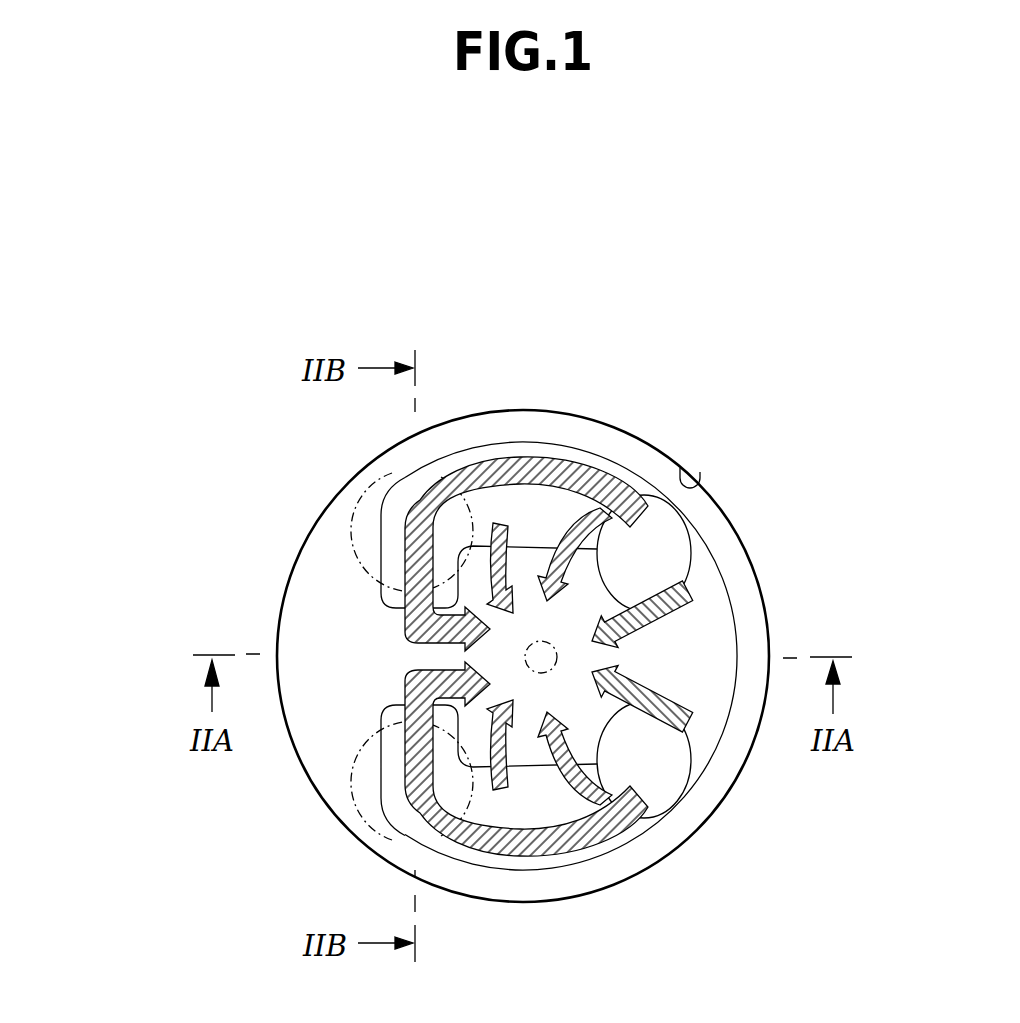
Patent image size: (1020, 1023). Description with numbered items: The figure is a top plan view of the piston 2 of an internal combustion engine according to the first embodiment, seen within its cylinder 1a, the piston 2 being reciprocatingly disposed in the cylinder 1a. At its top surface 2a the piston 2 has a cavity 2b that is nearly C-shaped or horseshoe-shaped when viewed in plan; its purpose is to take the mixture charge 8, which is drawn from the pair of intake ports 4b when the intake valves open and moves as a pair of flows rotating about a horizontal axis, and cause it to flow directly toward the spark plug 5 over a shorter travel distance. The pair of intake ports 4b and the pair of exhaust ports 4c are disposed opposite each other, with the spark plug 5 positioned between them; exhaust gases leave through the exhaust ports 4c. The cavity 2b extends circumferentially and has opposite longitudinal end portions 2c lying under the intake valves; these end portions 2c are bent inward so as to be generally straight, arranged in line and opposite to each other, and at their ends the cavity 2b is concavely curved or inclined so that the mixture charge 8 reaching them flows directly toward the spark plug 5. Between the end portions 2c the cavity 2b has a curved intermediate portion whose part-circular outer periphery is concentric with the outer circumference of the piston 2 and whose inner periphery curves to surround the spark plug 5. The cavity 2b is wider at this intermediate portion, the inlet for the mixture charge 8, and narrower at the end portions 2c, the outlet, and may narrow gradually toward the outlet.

The cylinder 1a is at (690, 488).
The piston 2 is at (651, 437).
The top surface 2a is at (557, 430).
The cavity 2b is at (733, 613).
The longitudinal end portions 2c is at (378, 588).
The intake ports 4b is at (352, 538).
The exhaust ports 4c is at (690, 550).
The spark plug 5 is at (541, 673).
The mixture charge 8 is at (499, 520).